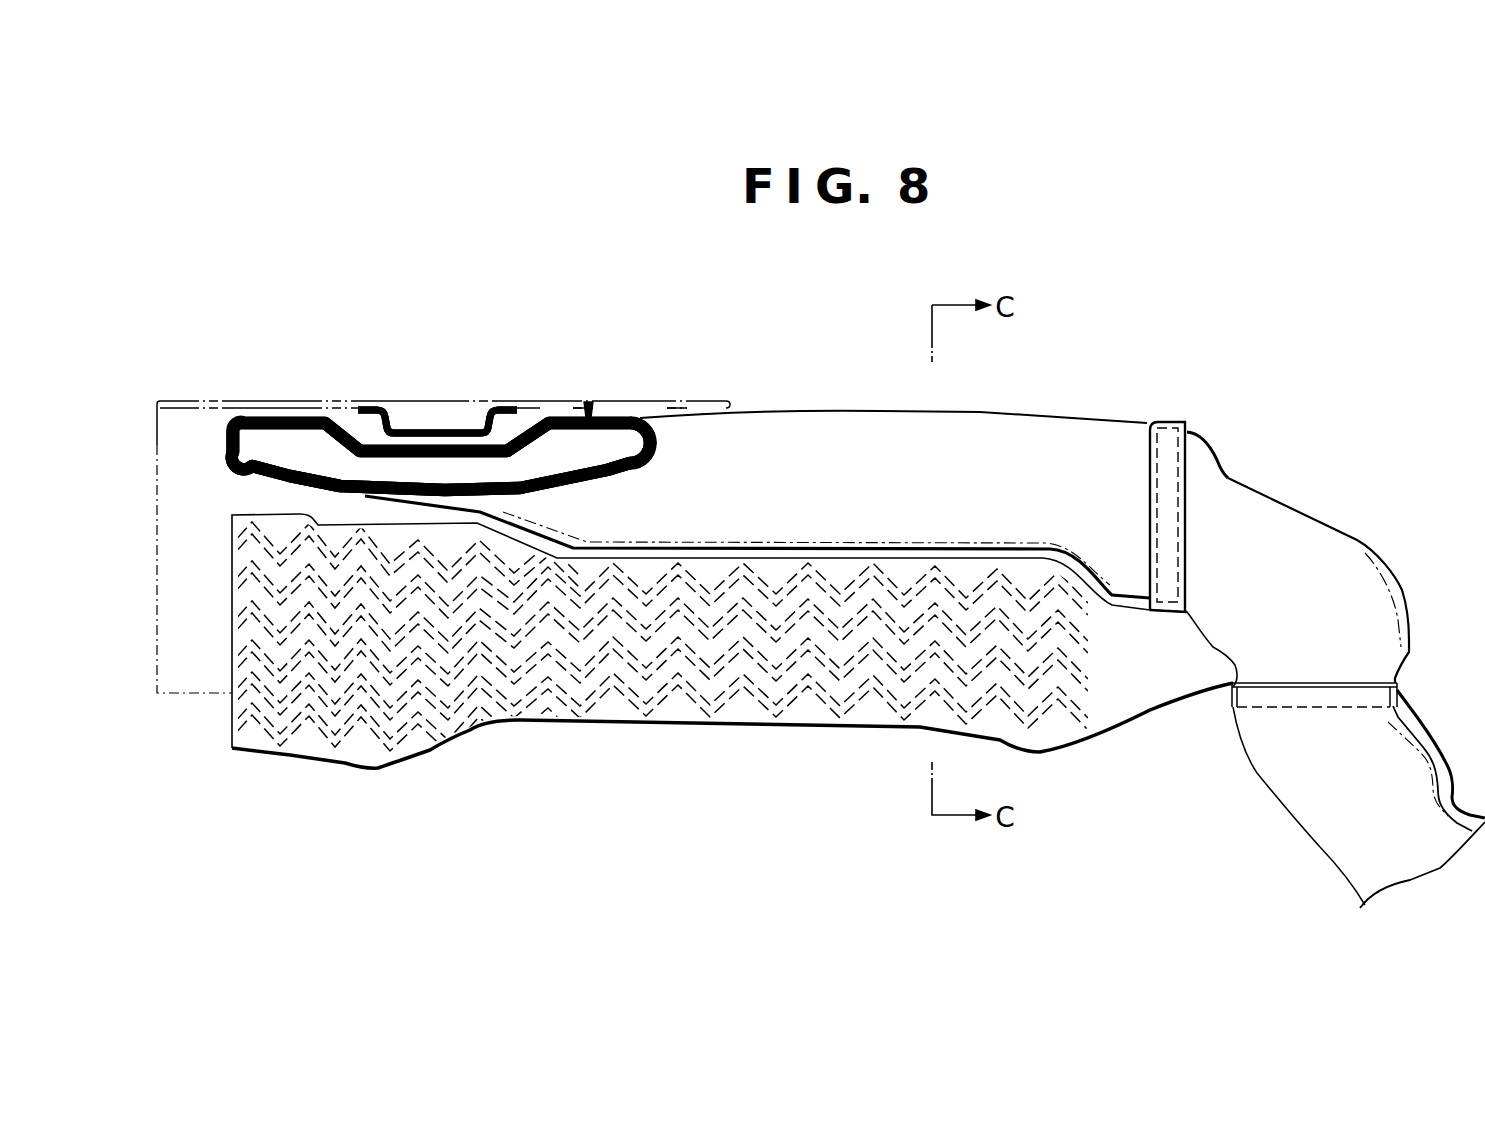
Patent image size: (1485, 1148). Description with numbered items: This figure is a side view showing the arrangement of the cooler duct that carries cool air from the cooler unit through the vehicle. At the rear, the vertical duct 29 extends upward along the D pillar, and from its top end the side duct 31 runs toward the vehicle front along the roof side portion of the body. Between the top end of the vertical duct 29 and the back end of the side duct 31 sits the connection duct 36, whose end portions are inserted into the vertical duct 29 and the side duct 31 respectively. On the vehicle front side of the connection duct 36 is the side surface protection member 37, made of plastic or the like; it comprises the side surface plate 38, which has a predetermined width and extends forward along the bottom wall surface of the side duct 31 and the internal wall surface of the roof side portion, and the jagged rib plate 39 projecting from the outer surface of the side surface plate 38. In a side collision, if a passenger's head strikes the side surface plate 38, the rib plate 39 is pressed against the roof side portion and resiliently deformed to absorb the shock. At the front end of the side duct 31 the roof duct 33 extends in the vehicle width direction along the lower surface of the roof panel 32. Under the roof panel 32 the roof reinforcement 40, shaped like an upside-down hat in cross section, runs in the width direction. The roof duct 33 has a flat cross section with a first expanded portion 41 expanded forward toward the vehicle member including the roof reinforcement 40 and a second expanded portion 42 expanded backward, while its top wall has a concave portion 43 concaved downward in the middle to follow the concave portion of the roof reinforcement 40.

The vertical duct 29 is at (1297, 810).
The side duct 31 is at (823, 420).
The roof panel 32 is at (272, 401).
The roof duct 33 is at (590, 403).
The connection duct 36 is at (1288, 522).
The side surface protection member 37 is at (764, 742).
The side surface plate 38 is at (658, 715).
The rib plate 39 is at (517, 718).
The roof reinforcement 40 is at (441, 430).
The first expanded portion 41 is at (250, 470).
The second expanded portion 42 is at (617, 468).
The concave portion 43 is at (366, 447).